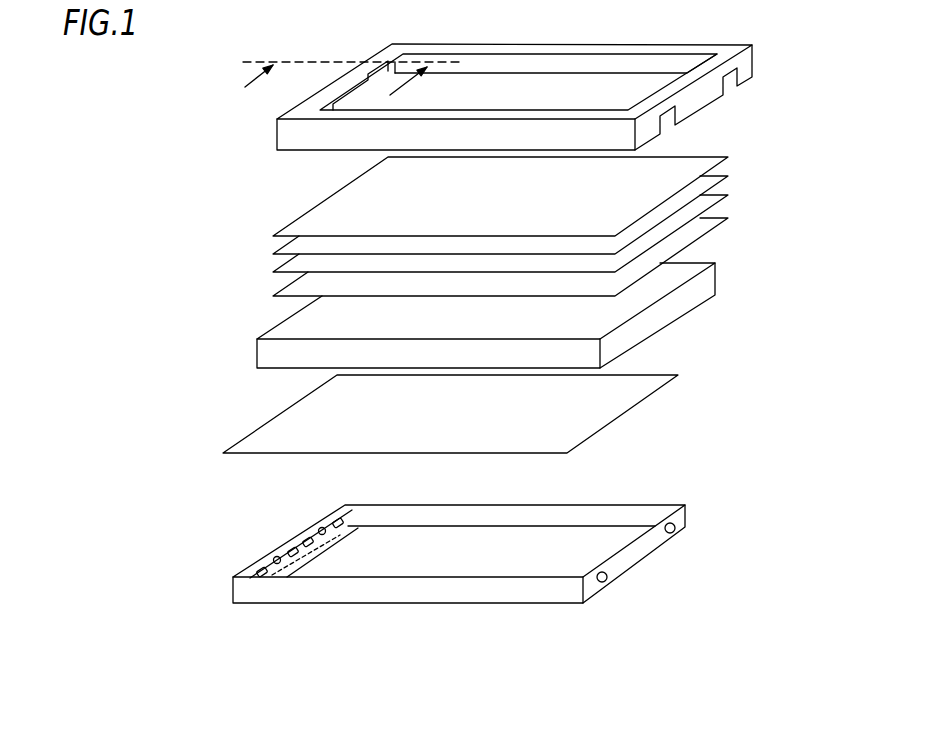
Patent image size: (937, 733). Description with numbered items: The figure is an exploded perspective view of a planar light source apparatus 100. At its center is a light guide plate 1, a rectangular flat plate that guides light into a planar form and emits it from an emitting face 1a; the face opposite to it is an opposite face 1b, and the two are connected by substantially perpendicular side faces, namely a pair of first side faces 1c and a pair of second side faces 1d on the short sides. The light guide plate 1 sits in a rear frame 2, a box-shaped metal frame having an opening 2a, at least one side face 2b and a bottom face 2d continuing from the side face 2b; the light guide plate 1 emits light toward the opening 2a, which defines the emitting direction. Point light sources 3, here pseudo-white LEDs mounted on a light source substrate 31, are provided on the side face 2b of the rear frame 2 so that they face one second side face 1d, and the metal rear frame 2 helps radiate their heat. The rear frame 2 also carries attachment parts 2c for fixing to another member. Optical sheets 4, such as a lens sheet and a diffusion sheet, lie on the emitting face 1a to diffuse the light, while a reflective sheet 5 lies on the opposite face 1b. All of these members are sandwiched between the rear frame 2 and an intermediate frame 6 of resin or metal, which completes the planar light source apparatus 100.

The planar light source apparatus 100 is at (473, 356).
The intermediate frame 6 is at (720, 44).
The optical sheets 4 is at (745, 155).
The light guide plate 1 is at (484, 313).
The emitting face 1a is at (683, 272).
The opposite face 1b is at (693, 310).
The first side faces 1c is at (270, 363).
The second side faces 1d is at (697, 348).
The reflective sheet 5 is at (585, 422).
The rear frame 2 is at (459, 532).
The opening 2a is at (498, 515).
The side face 2b is at (238, 570).
The attachment parts 2c is at (273, 555).
The bottom face 2d is at (600, 550).
The point light sources 3 is at (301, 521).
The light source substrate 31 is at (338, 510).